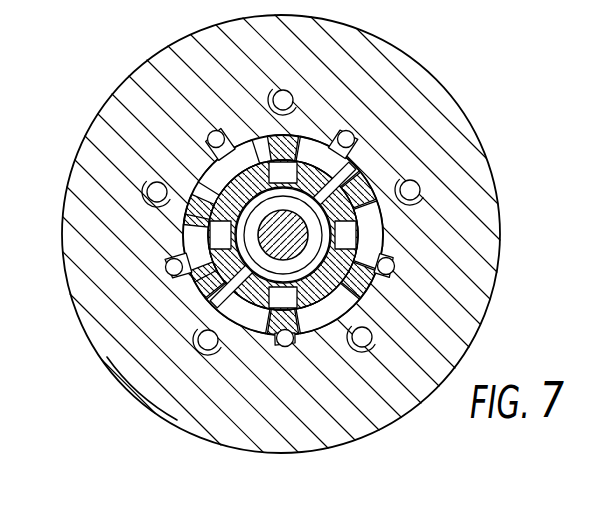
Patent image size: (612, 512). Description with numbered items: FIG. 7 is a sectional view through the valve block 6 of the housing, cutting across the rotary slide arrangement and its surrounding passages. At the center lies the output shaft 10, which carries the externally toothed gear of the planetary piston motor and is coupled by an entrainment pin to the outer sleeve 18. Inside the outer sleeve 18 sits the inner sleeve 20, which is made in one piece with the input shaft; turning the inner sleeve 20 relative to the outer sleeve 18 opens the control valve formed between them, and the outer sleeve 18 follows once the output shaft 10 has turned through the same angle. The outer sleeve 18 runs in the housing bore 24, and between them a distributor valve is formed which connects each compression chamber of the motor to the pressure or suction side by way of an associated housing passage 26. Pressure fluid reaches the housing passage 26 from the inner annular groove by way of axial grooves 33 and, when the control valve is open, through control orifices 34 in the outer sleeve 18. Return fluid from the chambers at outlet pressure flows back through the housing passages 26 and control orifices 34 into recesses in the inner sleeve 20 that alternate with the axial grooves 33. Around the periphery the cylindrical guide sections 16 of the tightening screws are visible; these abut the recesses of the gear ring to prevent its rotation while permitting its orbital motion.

The valve block 6 is at (430, 73).
The output shaft 10 is at (248, 253).
The cylindrical guide sections 16 is at (425, 195).
The outer sleeve 18 is at (335, 178).
The inner sleeve 20 is at (347, 186).
The housing bore 24 is at (195, 203).
The housing passage 26 is at (390, 274).
The axial grooves 33 is at (220, 175).
The control orifices 34 is at (255, 313).